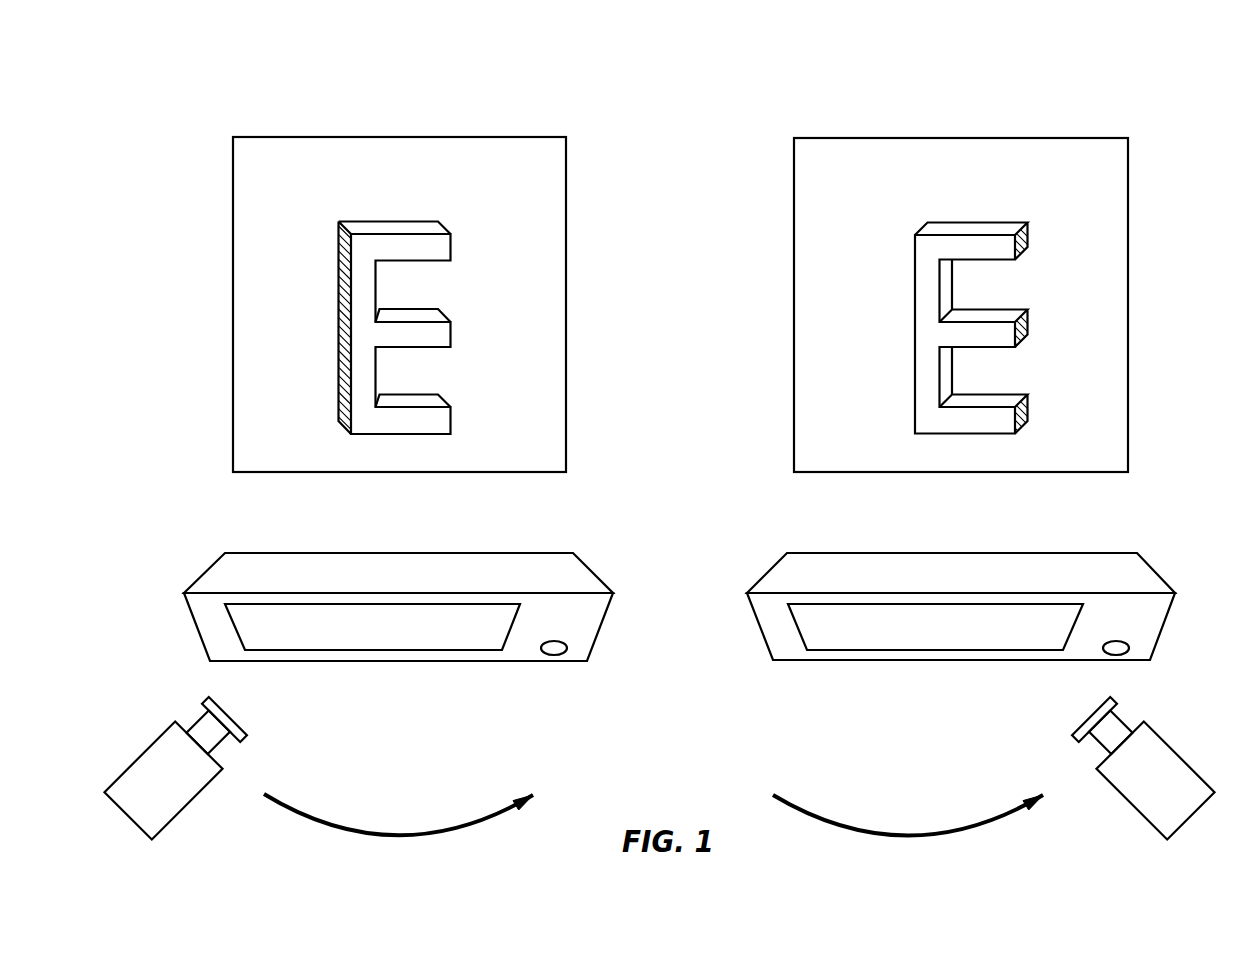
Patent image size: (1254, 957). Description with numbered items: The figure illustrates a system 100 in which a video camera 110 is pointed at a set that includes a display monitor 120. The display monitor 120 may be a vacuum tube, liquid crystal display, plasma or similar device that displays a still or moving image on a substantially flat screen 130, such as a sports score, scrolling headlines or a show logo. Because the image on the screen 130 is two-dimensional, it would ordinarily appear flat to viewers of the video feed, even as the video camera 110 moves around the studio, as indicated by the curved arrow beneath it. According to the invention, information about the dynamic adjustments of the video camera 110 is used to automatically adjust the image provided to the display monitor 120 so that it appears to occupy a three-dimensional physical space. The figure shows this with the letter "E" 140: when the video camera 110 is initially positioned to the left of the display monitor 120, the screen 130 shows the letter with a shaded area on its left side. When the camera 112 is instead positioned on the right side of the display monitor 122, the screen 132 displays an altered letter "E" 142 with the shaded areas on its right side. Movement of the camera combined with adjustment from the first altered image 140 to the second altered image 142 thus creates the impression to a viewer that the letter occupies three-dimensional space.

The system 100 is at (263, 64).
The video camera 110 is at (242, 730).
The camera 112 is at (1178, 750).
The display monitor 120 is at (519, 552).
The display monitor 122 is at (1082, 552).
The screen 130 is at (294, 182).
The screen 132 is at (849, 178).
The letter "E" 140 is at (422, 221).
The altered letter "E" 142 is at (976, 221).